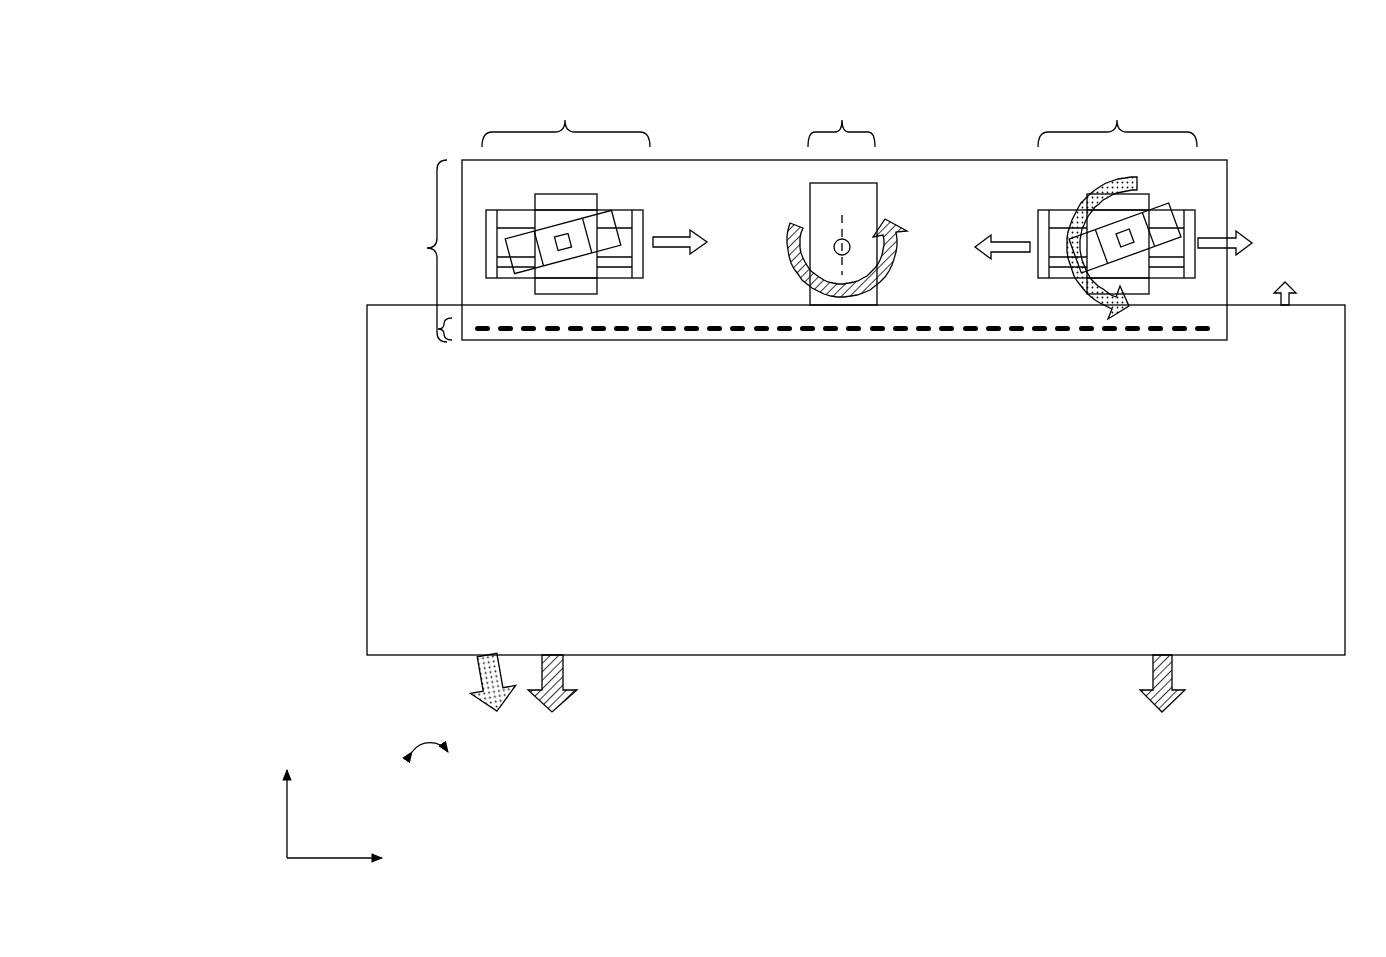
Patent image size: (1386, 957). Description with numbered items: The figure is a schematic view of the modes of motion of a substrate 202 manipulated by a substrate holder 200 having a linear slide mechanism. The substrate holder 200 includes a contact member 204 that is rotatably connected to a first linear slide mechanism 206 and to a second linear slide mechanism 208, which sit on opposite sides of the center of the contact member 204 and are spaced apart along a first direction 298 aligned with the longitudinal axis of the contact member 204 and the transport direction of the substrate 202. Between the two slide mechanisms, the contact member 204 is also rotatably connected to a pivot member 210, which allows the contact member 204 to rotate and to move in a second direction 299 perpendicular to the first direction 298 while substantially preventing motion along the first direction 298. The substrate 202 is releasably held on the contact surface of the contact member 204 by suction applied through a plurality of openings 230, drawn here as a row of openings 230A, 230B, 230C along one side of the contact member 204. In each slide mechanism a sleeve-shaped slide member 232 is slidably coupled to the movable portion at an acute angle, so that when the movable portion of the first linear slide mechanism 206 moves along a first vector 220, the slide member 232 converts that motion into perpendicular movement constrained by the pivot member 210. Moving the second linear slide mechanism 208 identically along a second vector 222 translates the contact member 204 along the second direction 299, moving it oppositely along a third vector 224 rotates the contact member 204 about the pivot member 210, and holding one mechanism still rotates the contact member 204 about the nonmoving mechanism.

The substrate holder 200 is at (260, 126).
The substrate 202 is at (870, 547).
The contact member 204 is at (424, 246).
The first linear slide mechanism 206 is at (563, 116).
The second linear slide mechanism 208 is at (1114, 116).
The pivot member 210 is at (840, 116).
The first vector 220 is at (680, 231).
The second vector 222 is at (1239, 229).
The third vector 224 is at (1002, 234).
The plurality of openings 230 is at (762, 362).
The first track section 230A is at (645, 332).
The second track section 230B is at (772, 332).
The third track section 230C is at (1022, 332).
The slide member 232 is at (530, 258).
The first direction 298 is at (375, 859).
The second direction 299 is at (302, 799).